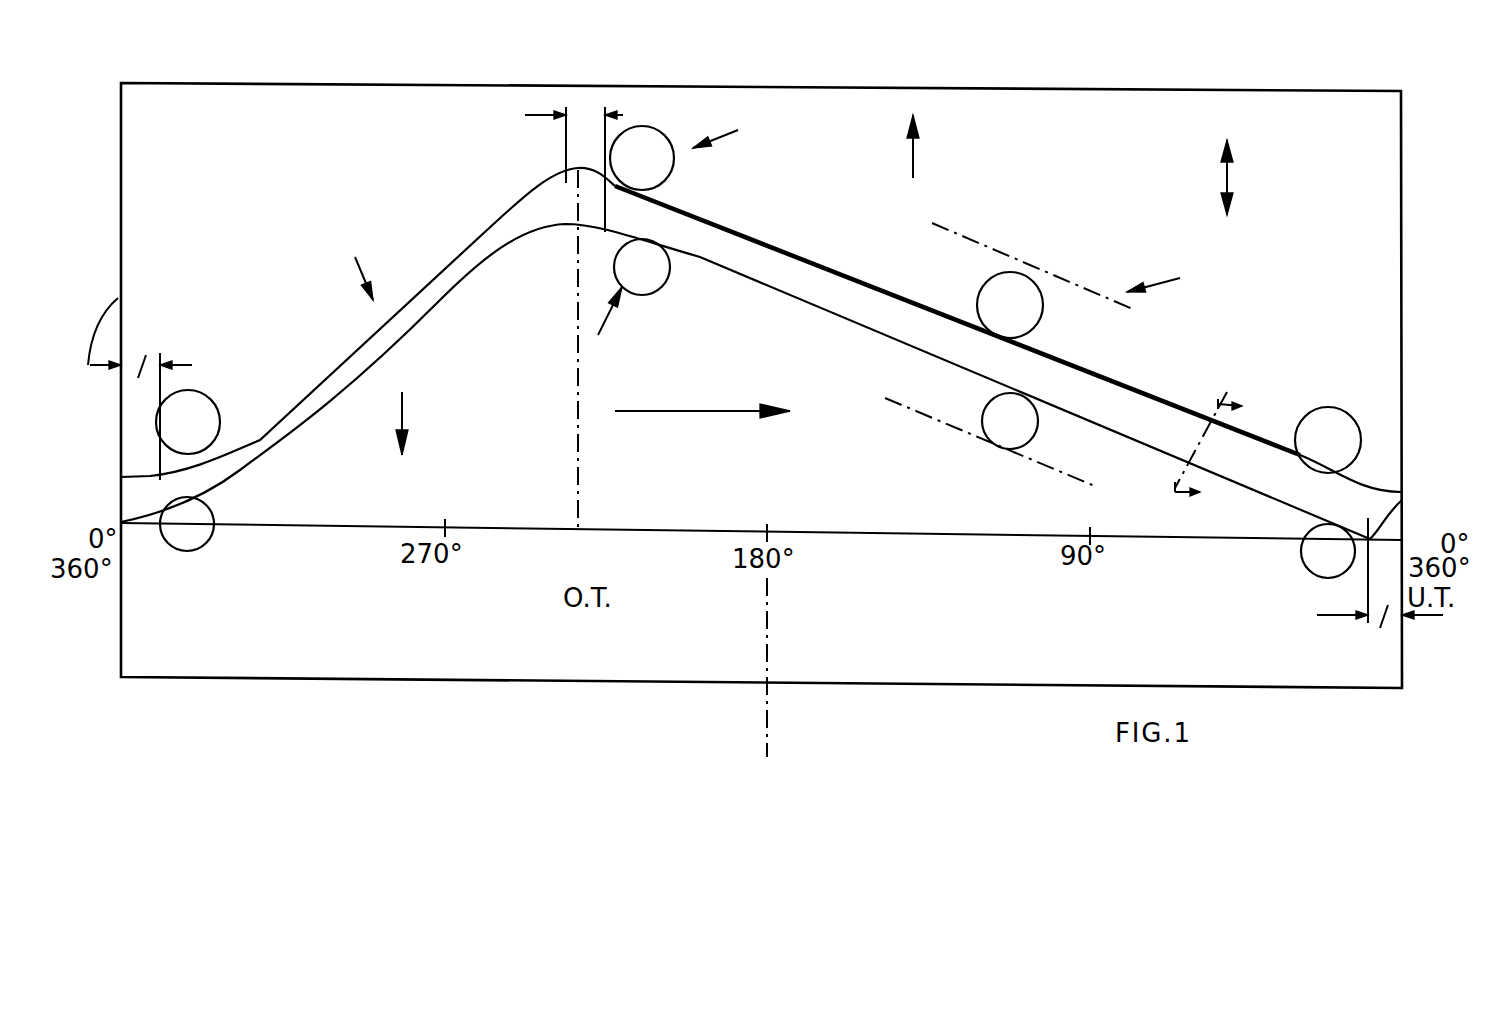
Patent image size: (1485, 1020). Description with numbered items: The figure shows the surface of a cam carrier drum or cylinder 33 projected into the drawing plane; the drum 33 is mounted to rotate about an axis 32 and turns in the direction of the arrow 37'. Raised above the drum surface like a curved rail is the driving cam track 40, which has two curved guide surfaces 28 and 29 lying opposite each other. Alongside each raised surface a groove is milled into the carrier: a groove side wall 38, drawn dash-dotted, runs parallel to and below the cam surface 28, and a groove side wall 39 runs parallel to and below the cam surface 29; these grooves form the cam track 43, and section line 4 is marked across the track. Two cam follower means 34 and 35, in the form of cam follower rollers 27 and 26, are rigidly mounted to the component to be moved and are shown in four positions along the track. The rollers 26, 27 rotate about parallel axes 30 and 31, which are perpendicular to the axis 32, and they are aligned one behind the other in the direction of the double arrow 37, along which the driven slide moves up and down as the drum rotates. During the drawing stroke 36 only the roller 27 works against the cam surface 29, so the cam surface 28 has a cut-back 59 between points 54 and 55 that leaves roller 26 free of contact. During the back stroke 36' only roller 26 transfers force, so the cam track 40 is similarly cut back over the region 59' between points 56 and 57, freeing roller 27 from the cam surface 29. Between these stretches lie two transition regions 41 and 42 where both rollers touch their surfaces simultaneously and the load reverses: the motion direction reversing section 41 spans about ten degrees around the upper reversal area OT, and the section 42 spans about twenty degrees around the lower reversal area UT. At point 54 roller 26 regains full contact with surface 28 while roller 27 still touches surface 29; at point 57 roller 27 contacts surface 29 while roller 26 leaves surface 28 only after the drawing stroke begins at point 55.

The section line 4- 4 is at (1218, 453).
The cam follower roller 26 is at (207, 545).
The cam follower roller 27 is at (215, 427).
The curved guide surface 28 is at (563, 227).
The curved guide surface 29 is at (402, 290).
The roller axis 30 is at (640, 268).
The roller axis 31 is at (640, 158).
The rotation axis 32 is at (768, 652).
The cam carrier drum 33 is at (367, 663).
The cam follower means 34 is at (734, 129).
The cam follower means 35 is at (606, 330).
The drawing stroke 36 is at (936, 146).
The back stroke 36' is at (423, 419).
The double arrow 37 is at (1248, 177).
The arrow 37' is at (700, 423).
The groove side wall 38 is at (888, 398).
The groove side wall 39 is at (933, 227).
The cam track 40 is at (351, 264).
The motion direction reversing section 41 is at (585, 122).
The motion direction reversing section 42 is at (765, 474).
The cam track 43 is at (1175, 278).
The point 54 is at (603, 227).
The point 55 is at (1328, 551).
The point 56 is at (565, 172).
The point 57 is at (162, 470).
The cut-back 59 is at (1287, 521).
The cut-back region 59' is at (261, 474).